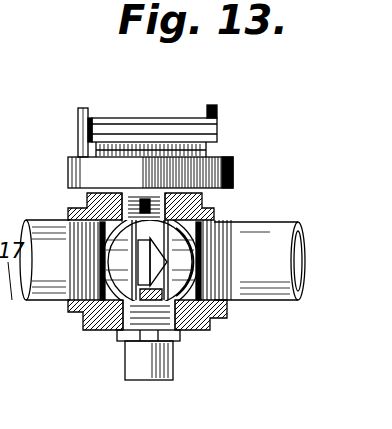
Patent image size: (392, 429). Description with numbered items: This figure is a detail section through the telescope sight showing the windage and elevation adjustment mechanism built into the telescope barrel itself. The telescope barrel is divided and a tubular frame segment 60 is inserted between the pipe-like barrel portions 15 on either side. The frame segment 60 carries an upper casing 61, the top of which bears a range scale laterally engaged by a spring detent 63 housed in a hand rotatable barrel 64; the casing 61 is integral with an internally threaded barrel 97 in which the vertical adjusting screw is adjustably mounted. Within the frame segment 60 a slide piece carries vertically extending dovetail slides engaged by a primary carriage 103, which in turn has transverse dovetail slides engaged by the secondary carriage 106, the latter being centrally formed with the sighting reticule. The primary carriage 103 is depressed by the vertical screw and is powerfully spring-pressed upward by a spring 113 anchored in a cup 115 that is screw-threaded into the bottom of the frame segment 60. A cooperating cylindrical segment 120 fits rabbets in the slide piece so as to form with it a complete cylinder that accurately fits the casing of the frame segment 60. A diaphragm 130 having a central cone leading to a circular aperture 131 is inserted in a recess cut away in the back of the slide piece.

The hand rotatable barrel 64 is at (156, 127).
The spring detent 63 is at (80, 150).
The upper casing 61 is at (150, 172).
The internally threaded barrel 97 is at (86, 199).
The primary carriage 103 is at (206, 212).
The circular aperture 131 is at (187, 258).
The pipe 15 is at (52, 302).
The secondary carriage 106 is at (92, 303).
The tubular frame segment 60 is at (100, 327).
The diaphragm 130 is at (213, 318).
The cylindrical segment 120 is at (107, 330).
The spring 113 is at (180, 341).
The cup 115 is at (140, 368).